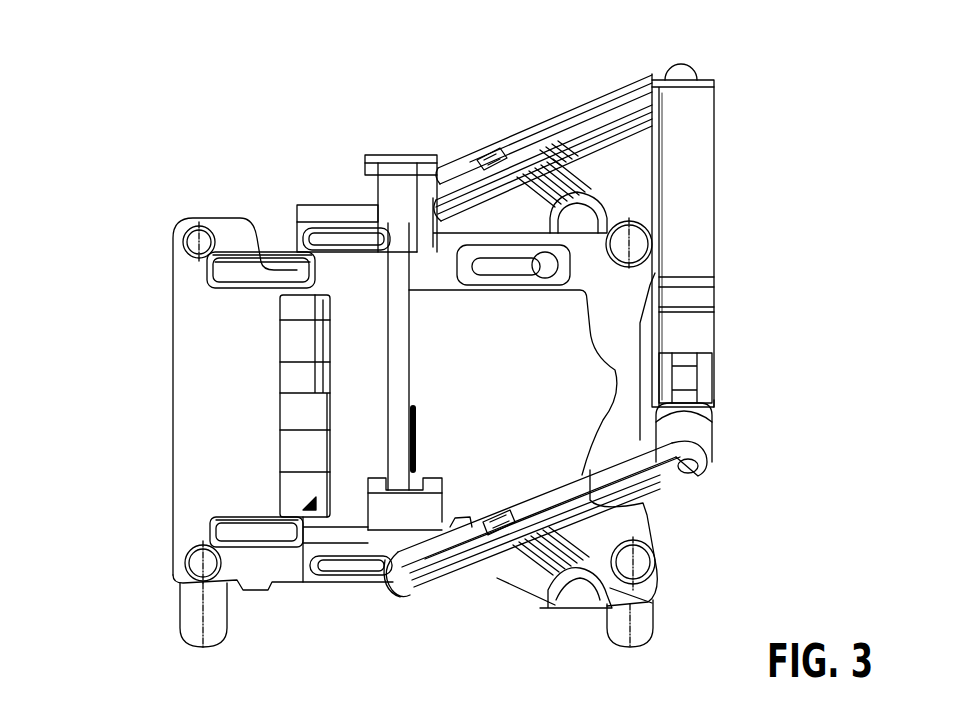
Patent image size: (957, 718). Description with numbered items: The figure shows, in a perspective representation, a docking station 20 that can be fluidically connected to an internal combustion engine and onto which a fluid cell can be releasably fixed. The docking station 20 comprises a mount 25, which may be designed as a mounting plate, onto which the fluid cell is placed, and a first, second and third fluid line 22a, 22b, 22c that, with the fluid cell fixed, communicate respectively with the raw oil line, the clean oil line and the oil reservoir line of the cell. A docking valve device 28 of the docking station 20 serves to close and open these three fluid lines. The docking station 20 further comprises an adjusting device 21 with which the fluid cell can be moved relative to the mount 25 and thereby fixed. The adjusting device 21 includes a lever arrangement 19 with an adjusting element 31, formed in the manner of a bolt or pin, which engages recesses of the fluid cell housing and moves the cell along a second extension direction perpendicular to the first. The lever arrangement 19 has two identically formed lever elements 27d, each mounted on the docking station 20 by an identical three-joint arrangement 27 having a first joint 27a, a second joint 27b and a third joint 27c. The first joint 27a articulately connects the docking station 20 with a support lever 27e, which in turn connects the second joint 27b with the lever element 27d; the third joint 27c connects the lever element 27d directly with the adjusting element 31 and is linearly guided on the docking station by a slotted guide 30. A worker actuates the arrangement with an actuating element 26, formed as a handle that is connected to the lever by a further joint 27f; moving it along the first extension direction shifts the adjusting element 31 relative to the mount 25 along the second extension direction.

The lever arrangement 19 is at (755, 400).
The docking station 20 is at (774, 140).
The adjusting device 21 is at (325, 155).
The first fluid line 22a is at (300, 340).
The second fluid line 22b is at (298, 420).
The third fluid line 22c is at (295, 492).
The mount 25 is at (190, 373).
The actuating element 26 is at (700, 265).
The three-joint arrangement 27 is at (517, 105).
The first joint 27a is at (578, 225).
The second joint 27b is at (488, 150).
The third joint 27c is at (402, 590).
The lever element 27d is at (597, 108).
The support lever 27e is at (555, 190).
The further joint 27f is at (686, 66).
The docking valve device 28 is at (314, 580).
The slotted guide 30 is at (347, 230).
The adjusting element 31 is at (402, 368).